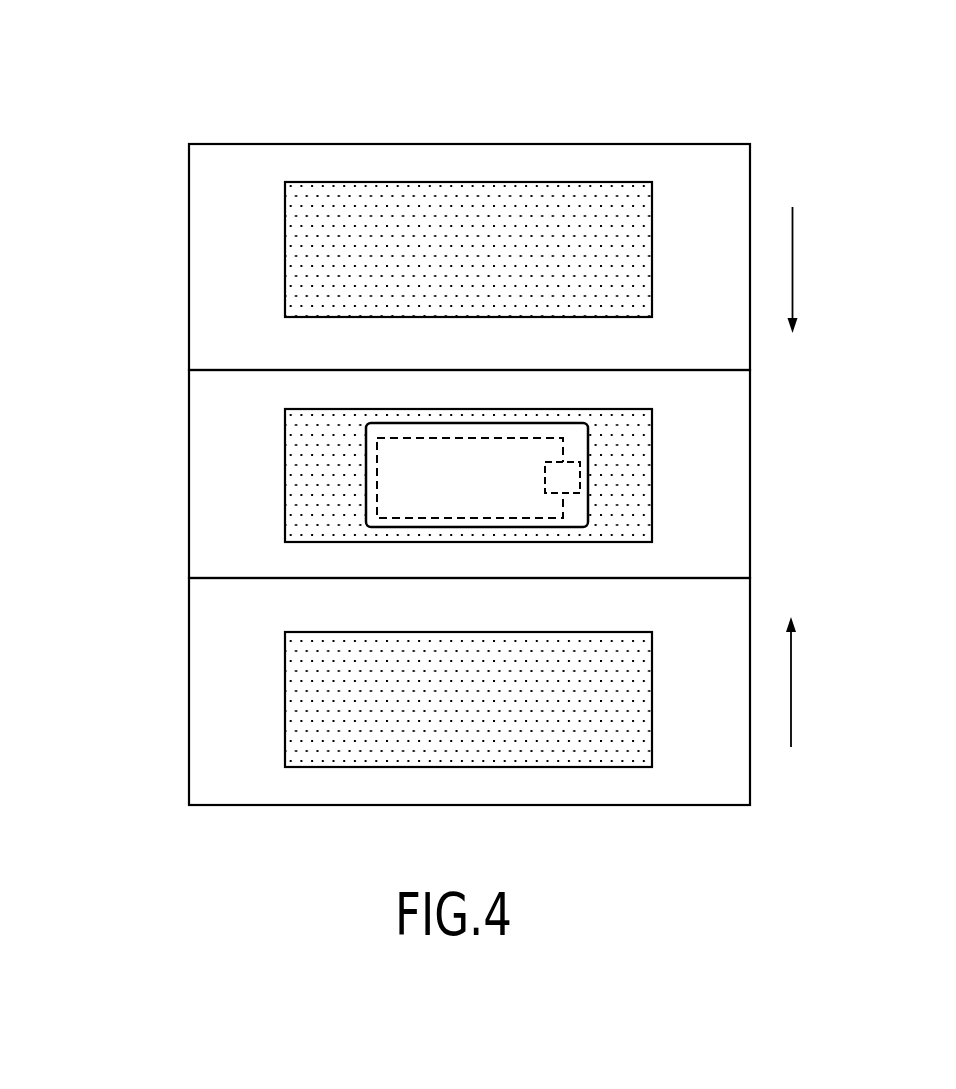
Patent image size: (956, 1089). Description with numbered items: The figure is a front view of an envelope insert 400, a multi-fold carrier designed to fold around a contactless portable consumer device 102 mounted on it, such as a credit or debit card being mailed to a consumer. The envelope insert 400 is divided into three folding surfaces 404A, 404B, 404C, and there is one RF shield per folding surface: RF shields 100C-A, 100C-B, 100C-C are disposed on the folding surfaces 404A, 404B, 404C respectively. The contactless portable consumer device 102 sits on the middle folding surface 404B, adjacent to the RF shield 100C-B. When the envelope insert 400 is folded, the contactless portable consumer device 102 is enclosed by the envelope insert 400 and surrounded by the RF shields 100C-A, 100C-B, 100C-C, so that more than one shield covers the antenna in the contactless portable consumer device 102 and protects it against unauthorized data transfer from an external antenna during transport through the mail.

The envelope insert 400 is at (248, 71).
The folding surface 404A is at (398, 257).
The folding surface 404B is at (443, 474).
The folding surface 404C is at (398, 691).
The RF shield 100C-A is at (285, 250).
The RF shield 100C-B is at (285, 475).
The RF shield 100C-C is at (285, 701).
The contactless portable consumer device 102 is at (588, 447).